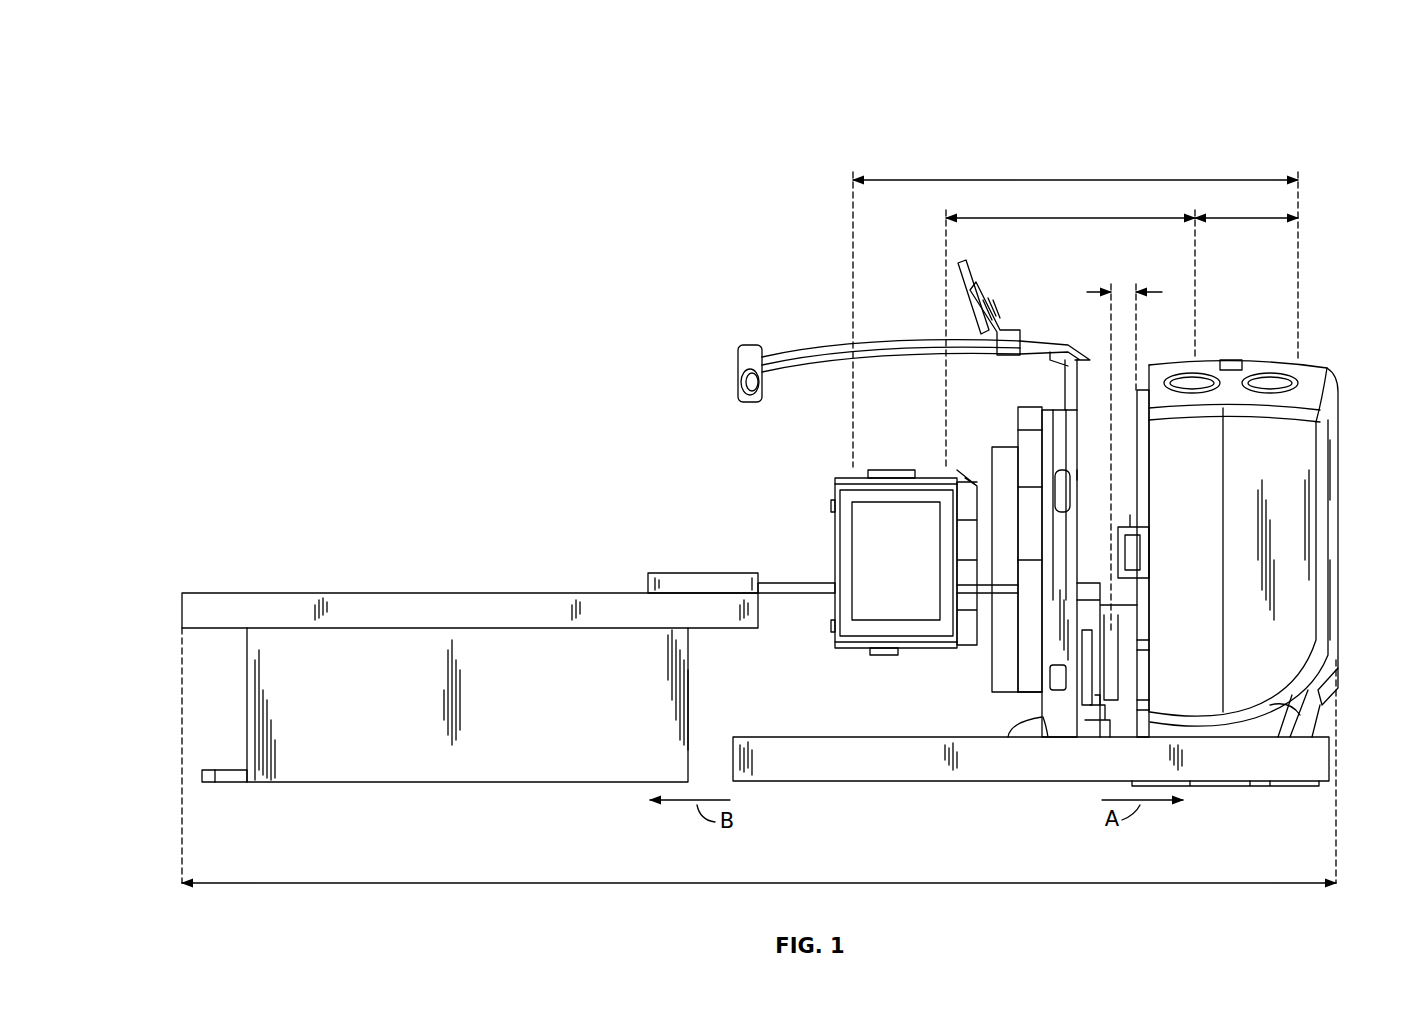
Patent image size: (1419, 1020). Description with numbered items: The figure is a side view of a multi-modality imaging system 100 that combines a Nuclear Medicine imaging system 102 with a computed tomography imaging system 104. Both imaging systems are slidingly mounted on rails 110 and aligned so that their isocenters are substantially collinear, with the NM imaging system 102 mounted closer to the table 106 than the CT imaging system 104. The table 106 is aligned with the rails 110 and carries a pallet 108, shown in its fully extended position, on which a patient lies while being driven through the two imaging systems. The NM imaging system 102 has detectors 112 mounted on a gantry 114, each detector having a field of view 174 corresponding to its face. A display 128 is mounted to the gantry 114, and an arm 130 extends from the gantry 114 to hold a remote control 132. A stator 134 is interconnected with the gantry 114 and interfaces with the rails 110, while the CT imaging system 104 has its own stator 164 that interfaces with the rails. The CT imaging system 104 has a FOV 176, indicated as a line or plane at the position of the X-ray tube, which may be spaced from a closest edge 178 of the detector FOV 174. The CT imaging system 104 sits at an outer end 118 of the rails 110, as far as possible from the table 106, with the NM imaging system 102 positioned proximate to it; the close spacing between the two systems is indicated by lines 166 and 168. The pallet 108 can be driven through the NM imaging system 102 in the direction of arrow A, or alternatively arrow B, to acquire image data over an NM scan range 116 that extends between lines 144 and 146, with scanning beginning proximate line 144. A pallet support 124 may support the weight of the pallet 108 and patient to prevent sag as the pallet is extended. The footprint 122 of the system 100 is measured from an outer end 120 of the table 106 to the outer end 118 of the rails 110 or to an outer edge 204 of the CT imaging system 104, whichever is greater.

The multi-modality imaging system 100 is at (668, 118).
The Nuclear Medicine (NM) imaging system 102 is at (738, 152).
The computed tomography (CT) imaging system 104 is at (1137, 155).
The table 106 is at (247, 593).
The pallet 108 is at (773, 580).
The rails 110 is at (840, 782).
The detectors 112 is at (848, 474).
The gantry 114 is at (1015, 412).
The NM scan range 116 is at (1130, 180).
The outer end of the rails 118 is at (1329, 760).
The outer end of the table 120 is at (182, 610).
The footprint 122 is at (488, 882).
The pallet support 124 is at (1087, 640).
The display 128 is at (982, 282).
The arm 130 is at (820, 352).
The remote control 132 is at (747, 383).
The stator 134 is at (1048, 720).
The line 144 is at (853, 270).
The line 146 is at (1298, 196).
The stator 164 is at (1273, 715).
The line 166 is at (1111, 330).
The line 168 is at (1136, 330).
The field of view (FOV) 174 is at (852, 660).
The FOV 176 is at (1195, 262).
The closest edge of the FOV 178 is at (946, 270).
The outer edge of the CT imaging system 204 is at (1338, 650).